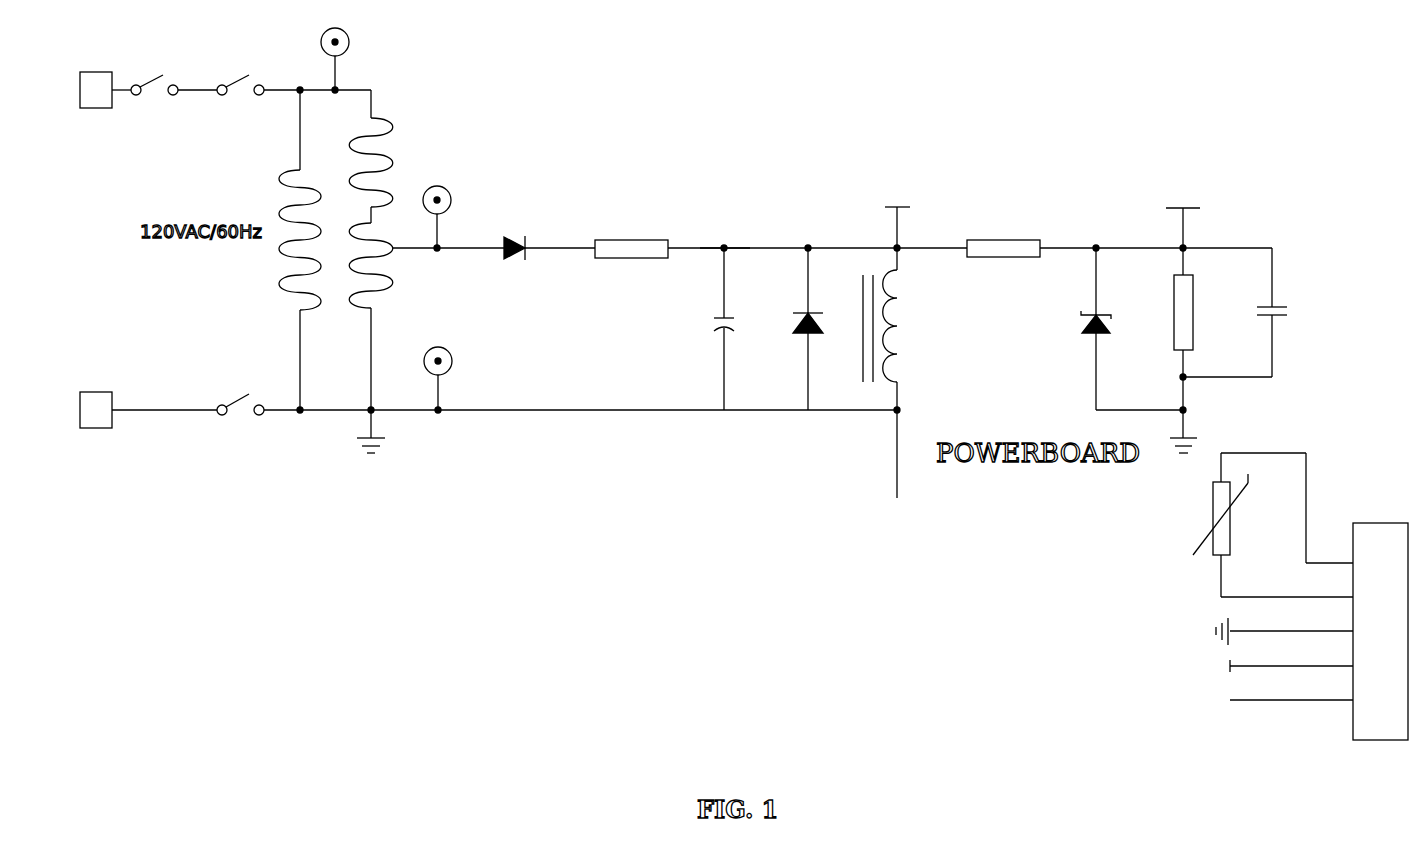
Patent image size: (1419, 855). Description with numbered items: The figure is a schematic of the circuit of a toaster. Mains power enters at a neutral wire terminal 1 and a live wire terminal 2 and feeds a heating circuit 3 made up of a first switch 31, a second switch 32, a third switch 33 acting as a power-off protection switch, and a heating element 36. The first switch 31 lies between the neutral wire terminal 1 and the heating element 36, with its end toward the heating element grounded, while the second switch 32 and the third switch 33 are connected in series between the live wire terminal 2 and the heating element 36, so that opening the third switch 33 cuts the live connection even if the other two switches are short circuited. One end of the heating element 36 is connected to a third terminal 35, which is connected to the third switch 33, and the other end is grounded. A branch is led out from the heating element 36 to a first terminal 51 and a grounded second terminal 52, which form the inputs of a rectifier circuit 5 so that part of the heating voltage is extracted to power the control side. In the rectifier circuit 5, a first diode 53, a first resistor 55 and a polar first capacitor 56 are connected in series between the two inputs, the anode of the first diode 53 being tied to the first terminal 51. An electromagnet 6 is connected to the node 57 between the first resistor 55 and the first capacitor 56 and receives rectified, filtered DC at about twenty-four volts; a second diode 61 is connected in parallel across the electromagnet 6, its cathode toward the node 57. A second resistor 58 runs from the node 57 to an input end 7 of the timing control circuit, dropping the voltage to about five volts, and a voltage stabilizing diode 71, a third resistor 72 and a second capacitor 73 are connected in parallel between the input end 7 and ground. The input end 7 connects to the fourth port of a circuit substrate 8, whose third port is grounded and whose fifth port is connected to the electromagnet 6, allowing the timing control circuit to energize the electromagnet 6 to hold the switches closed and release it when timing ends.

The neutral wire terminal 1 is at (97, 462).
The live wire terminal 2 is at (97, 137).
The heating circuit 3 is at (197, 80).
The first switch 31 is at (240, 428).
The second switch 32 is at (157, 98).
The third switch 33 is at (240, 98).
The third terminal 35 is at (348, 80).
The heating element 36 is at (405, 130).
The rectifier circuit 5 is at (567, 423).
The first terminal 51 is at (443, 240).
The second terminal 52 is at (445, 400).
The first diode 53 is at (533, 233).
The first resistor 55 is at (660, 225).
The first capacitor 56 is at (738, 333).
The node 57 is at (725, 238).
The second resistor 58 is at (1030, 235).
The electromagnet 6 is at (913, 352).
The second diode 61 is at (795, 340).
The input end of the timing control circuit 7 is at (1190, 240).
The voltage stabilizing diode 71 is at (1080, 340).
The third resistor 72 is at (1205, 340).
The second capacitor 73 is at (1284, 298).
The circuit substrate 8 is at (1345, 483).